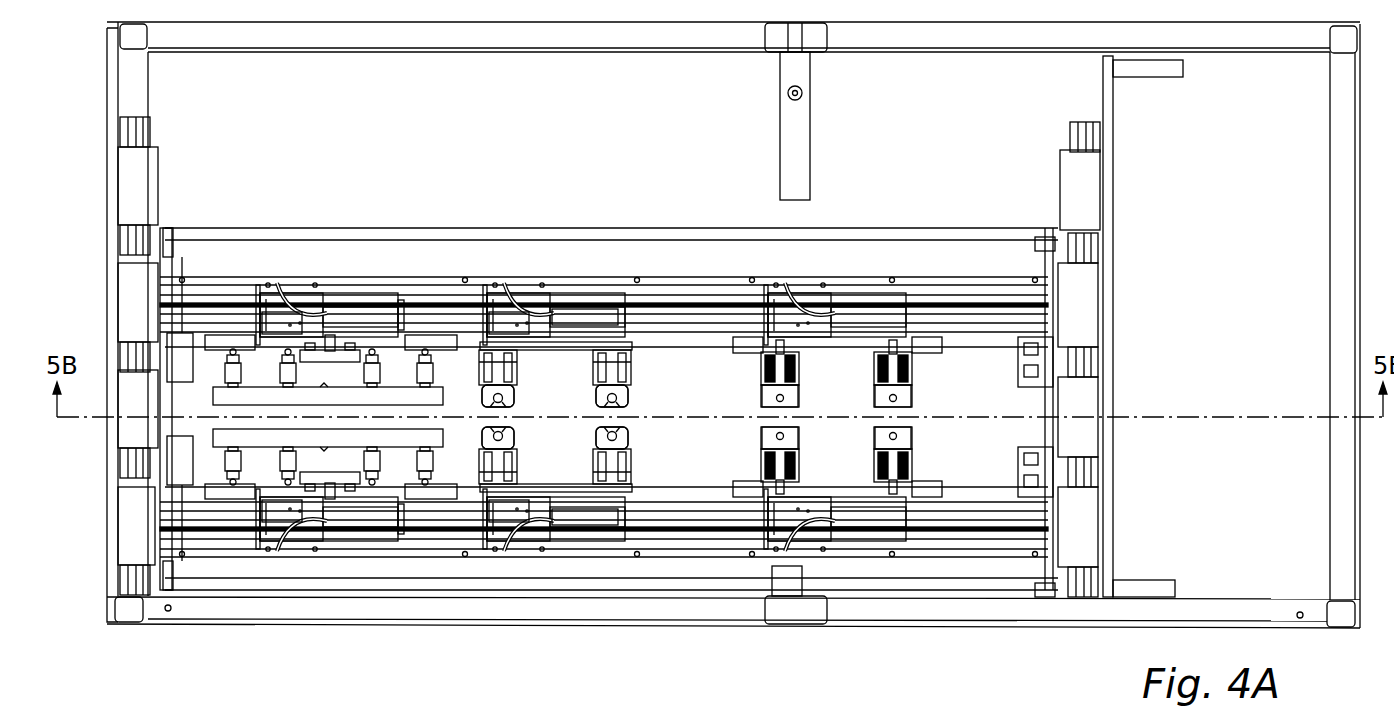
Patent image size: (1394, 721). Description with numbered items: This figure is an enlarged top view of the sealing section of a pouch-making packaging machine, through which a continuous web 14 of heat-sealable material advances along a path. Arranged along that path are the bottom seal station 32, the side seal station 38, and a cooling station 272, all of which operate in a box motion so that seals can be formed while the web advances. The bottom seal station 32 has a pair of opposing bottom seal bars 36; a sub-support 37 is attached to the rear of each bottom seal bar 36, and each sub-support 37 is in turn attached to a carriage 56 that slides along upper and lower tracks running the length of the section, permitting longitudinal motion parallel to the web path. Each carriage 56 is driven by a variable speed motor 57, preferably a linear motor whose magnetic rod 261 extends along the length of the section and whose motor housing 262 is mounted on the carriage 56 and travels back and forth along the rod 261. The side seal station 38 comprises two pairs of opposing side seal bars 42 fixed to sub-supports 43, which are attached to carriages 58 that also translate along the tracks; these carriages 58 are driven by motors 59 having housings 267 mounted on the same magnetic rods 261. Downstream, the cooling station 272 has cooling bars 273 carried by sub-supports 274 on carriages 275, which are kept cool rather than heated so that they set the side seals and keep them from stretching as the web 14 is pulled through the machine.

The web 14 is at (1135, 417).
The bottom seal station 32 is at (340, 268).
The side seal station 38 is at (524, 268).
The magnetic rod 261 is at (208, 325).
The motor housing 262 is at (380, 300).
The variable speed motor 57 is at (280, 318).
The carriage 56 is at (408, 325).
The carriage 58 is at (635, 330).
The motor 59 is at (597, 325).
The housing 267 is at (580, 310).
The cooling station 272 is at (845, 298).
The bottom seal bar 36 is at (214, 432).
The sub-support 37 is at (434, 360).
The sub-support 43 is at (638, 360).
The side seal bar 42 is at (596, 396).
The carriage 275 is at (866, 345).
The cooling bar 273 is at (770, 405).
The sub-support 274 is at (760, 372).